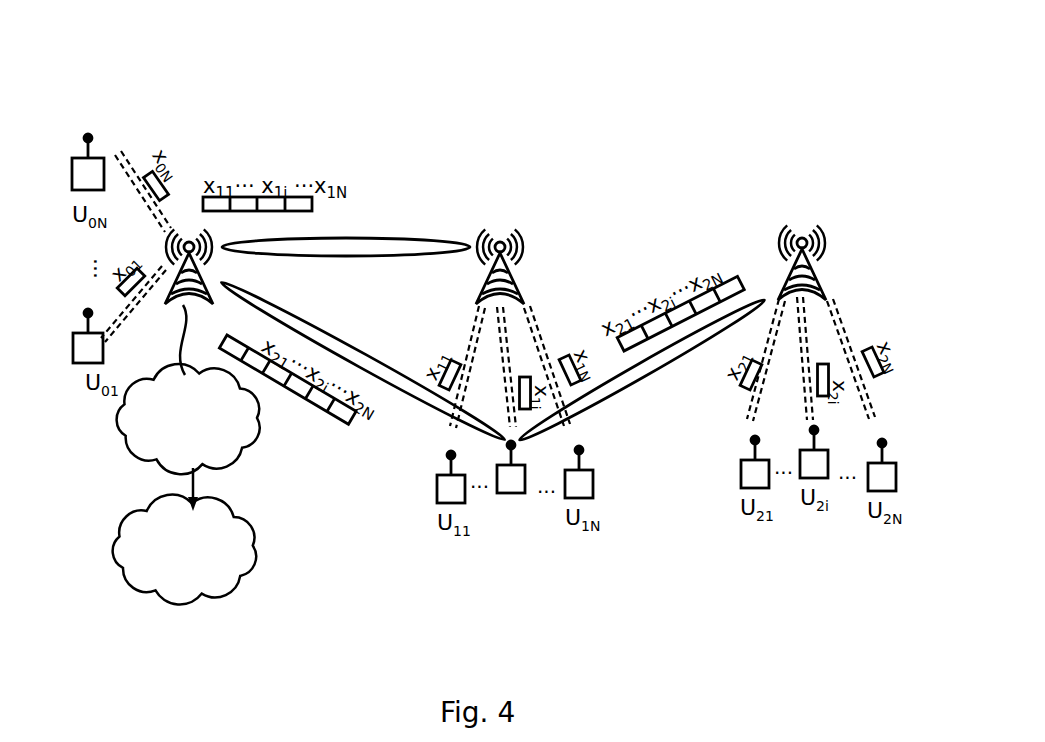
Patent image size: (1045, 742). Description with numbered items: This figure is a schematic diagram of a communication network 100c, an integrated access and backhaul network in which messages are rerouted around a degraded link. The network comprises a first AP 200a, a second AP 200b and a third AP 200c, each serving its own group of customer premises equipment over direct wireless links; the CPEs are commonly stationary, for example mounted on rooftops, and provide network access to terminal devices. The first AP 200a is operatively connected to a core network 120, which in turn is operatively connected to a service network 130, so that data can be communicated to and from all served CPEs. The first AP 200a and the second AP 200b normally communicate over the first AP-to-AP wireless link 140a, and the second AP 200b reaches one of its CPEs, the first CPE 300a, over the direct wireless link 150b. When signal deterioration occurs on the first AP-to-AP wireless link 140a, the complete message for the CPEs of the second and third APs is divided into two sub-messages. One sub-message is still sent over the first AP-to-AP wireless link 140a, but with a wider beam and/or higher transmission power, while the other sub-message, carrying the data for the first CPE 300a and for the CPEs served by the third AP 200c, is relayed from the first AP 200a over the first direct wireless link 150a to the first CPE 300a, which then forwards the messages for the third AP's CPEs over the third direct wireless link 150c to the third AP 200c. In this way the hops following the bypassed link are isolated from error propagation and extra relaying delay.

The communication network 100c is at (196, 62).
The first AP 200a is at (189, 240).
The second AP 200b is at (500, 240).
The third AP 200c is at (802, 236).
The first AP-to-AP wireless link 140a is at (390, 236).
The first direct wireless link 150a is at (402, 394).
The direct wireless link 150b is at (507, 342).
The third direct wireless link 150c is at (634, 380).
The core network 120 is at (188, 419).
The service network 130 is at (184, 550).
The first CPE 300a is at (511, 493).